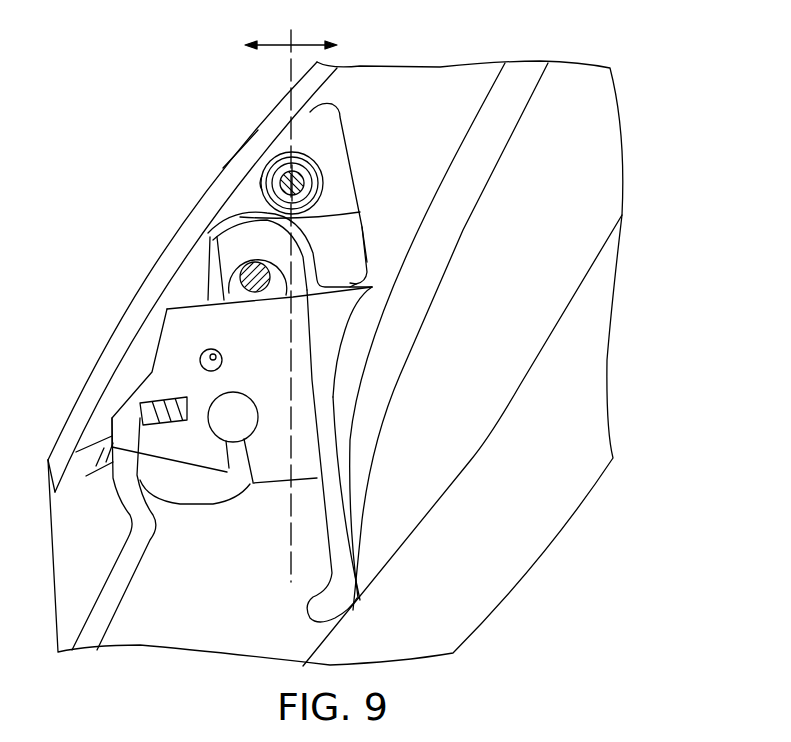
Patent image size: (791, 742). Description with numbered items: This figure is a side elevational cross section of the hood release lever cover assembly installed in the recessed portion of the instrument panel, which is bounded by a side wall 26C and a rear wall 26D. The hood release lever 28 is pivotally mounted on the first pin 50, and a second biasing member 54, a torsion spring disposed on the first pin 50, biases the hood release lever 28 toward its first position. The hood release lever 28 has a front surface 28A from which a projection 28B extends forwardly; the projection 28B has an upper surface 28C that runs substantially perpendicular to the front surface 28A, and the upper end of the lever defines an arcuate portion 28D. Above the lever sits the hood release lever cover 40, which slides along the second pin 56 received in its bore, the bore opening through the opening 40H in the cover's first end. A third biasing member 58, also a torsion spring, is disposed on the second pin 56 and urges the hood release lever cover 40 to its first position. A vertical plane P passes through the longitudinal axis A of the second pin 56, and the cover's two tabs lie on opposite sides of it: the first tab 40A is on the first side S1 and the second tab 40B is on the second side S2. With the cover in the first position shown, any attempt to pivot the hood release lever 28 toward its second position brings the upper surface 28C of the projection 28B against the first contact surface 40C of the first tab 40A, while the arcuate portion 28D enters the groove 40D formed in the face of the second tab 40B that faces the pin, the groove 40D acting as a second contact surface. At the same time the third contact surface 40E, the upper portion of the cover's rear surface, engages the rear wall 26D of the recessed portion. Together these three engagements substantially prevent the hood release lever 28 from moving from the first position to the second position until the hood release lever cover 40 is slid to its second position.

The side wall 26C is at (187, 611).
The rear wall 26D is at (212, 176).
The hood release lever 28 is at (342, 599).
The front surface 28A is at (343, 547).
The projection 28B is at (363, 307).
The upper surface 28C is at (350, 283).
The arcuate portion 28D is at (220, 220).
The hood release lever cover 40 is at (352, 170).
The first tab 40A is at (367, 233).
The second tab 40B is at (195, 267).
The first contact surface 40C is at (350, 330).
The groove 40D is at (210, 231).
The third contact surface 40E is at (223, 168).
The opening 40H is at (303, 158).
The first pin 50 is at (278, 299).
The second biasing member 54 is at (207, 284).
The second pin 56 is at (287, 178).
The third biasing member 58 is at (262, 183).
The longitudinal axis A is at (299, 186).
The vertical plane P is at (290, 563).
The first side S1 is at (310, 48).
The second side S2 is at (232, 48).